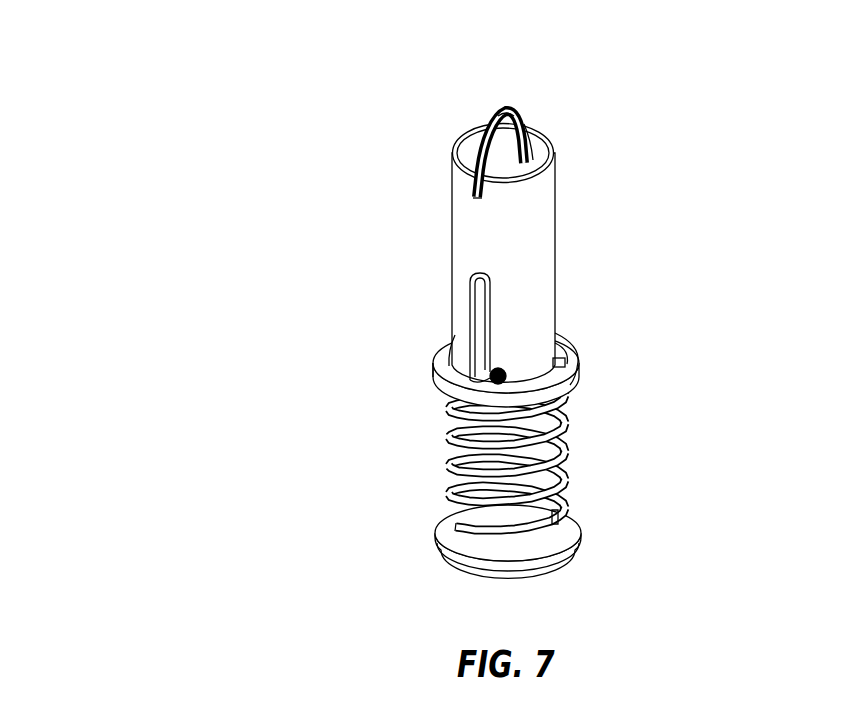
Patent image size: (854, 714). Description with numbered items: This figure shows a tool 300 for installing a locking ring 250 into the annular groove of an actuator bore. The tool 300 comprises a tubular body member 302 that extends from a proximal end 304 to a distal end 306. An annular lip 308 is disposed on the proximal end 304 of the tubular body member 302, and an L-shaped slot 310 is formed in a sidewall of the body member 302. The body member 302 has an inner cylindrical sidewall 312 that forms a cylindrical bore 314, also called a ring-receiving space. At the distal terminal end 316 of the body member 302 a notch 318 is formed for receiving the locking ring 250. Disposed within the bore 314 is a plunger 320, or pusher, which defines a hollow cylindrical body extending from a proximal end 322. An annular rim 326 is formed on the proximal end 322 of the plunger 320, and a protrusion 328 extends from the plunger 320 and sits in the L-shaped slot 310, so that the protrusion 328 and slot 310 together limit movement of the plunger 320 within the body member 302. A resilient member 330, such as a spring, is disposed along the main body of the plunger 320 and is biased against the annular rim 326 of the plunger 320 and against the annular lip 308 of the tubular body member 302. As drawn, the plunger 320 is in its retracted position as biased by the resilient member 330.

The tool 300 is at (205, 163).
The tubular body member 302 is at (554, 165).
The proximal end 304 is at (448, 366).
The distal end 306 is at (452, 152).
The annular lip 308 is at (433, 363).
The L-shaped slot 310 is at (472, 325).
The inner cylindrical sidewall 312 is at (532, 132).
The cylindrical bore 314 is at (508, 109).
The distal terminal end 316 is at (548, 137).
The notch 318 is at (472, 193).
The plunger 320 is at (530, 522).
The proximal end 322 is at (476, 527).
The annular rim 326 is at (442, 547).
The protrusion 328 is at (510, 382).
The resilient member 330 is at (445, 463).
The ring 250 is at (472, 133).